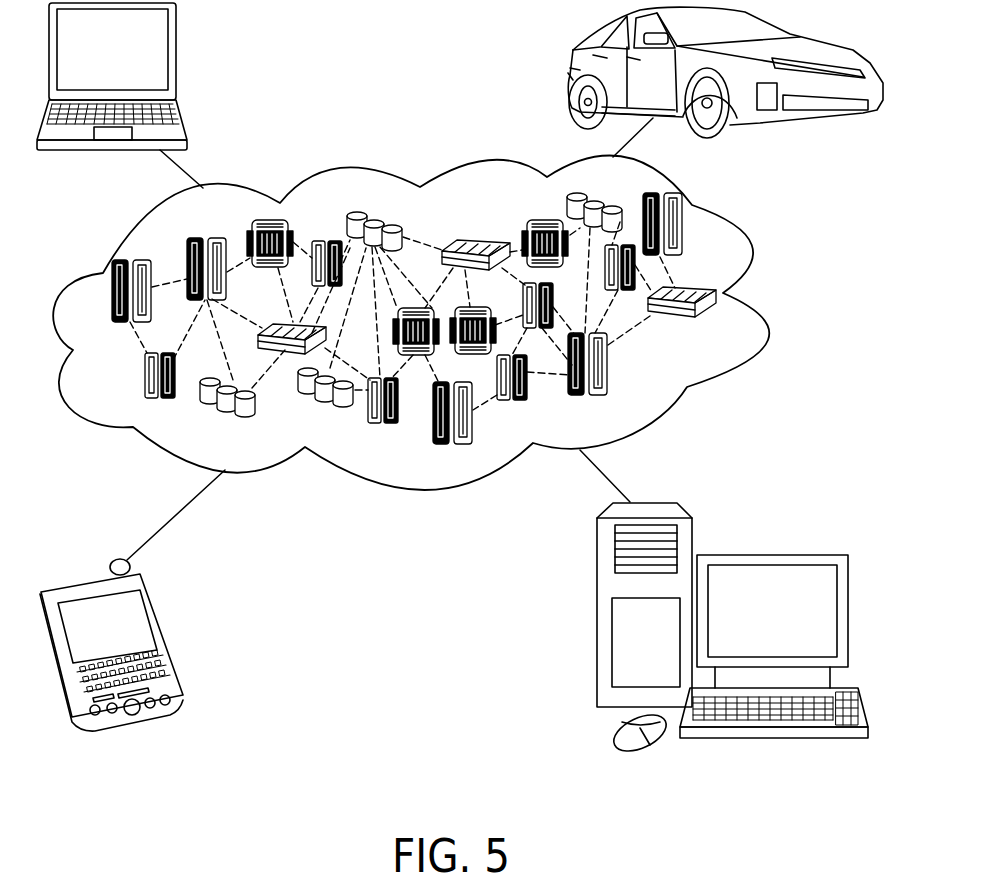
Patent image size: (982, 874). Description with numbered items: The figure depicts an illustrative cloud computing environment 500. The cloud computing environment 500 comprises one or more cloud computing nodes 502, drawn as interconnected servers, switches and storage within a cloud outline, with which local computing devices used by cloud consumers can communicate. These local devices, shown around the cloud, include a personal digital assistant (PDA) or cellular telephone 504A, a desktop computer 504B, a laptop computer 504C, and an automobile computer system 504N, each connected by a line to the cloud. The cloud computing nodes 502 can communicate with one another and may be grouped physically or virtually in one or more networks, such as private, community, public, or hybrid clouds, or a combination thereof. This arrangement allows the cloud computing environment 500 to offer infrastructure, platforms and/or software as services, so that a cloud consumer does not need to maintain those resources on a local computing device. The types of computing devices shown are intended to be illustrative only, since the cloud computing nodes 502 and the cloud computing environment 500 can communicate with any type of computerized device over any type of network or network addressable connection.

The cloud computing environment 500 is at (752, 285).
The cloud computing nodes 502 is at (720, 325).
The personal digital assistant (PDA) or cellular telephone 504A is at (155, 607).
The desktop computer 504B is at (760, 553).
The laptop computer 504C is at (175, 32).
The automobile computer system 504N is at (570, 74).